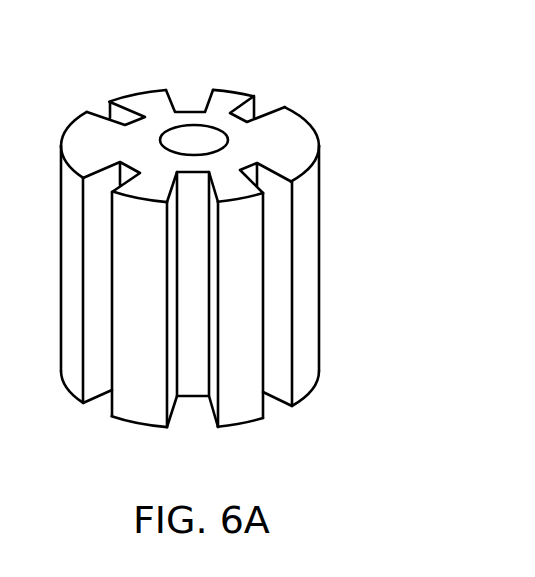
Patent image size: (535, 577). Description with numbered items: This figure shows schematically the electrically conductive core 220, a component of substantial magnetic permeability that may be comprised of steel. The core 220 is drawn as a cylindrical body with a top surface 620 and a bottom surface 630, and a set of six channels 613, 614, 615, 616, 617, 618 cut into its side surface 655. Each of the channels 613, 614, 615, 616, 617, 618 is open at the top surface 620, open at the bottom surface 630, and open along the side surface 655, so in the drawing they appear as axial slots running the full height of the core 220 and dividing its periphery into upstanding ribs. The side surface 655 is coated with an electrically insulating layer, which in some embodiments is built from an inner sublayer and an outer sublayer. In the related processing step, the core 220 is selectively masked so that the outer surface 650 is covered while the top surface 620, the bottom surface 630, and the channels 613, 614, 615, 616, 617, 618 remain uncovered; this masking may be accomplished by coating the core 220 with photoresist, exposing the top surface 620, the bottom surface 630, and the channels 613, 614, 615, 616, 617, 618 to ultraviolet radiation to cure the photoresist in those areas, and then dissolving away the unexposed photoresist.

The electrically conductive core 220 is at (212, 247).
The channel 613 is at (185, 97).
The channel 614 is at (268, 106).
The channel 615 is at (273, 402).
The channel 616 is at (193, 415).
The channel 617 is at (100, 408).
The channel 618 is at (102, 107).
The top surface 620 is at (300, 144).
The bottom surface 630 is at (135, 425).
The outer surface 650 is at (318, 226).
The side surface 655 is at (318, 287).